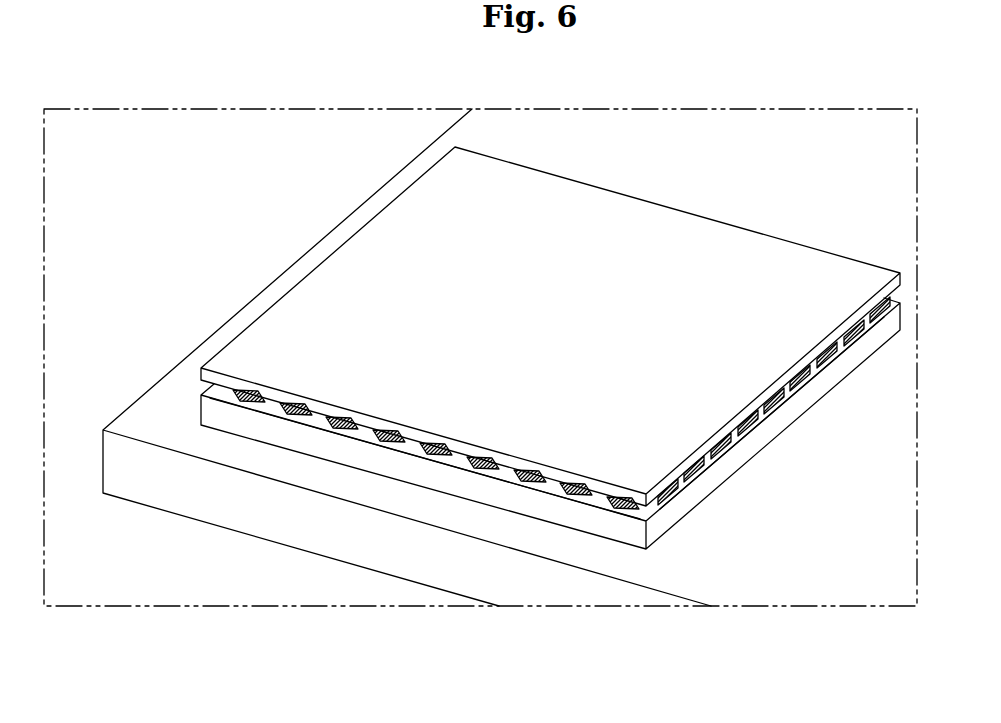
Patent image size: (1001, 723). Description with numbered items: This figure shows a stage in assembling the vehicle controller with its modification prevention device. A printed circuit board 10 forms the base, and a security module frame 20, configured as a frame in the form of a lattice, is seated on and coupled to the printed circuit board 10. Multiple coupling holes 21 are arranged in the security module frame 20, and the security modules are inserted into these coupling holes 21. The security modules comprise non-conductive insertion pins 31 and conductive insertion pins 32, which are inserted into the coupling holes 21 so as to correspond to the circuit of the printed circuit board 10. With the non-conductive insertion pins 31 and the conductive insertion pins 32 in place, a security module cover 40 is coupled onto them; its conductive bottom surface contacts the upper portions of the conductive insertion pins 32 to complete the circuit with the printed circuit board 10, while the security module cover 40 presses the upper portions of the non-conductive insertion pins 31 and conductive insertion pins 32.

The printed circuit board 10 is at (158, 410).
The security module frame 20 is at (293, 432).
The coupling holes 21 is at (548, 487).
The non-conductive insertion pin 31 is at (735, 443).
The conductive insertion pin 32 is at (562, 485).
The security module cover 40 is at (318, 288).